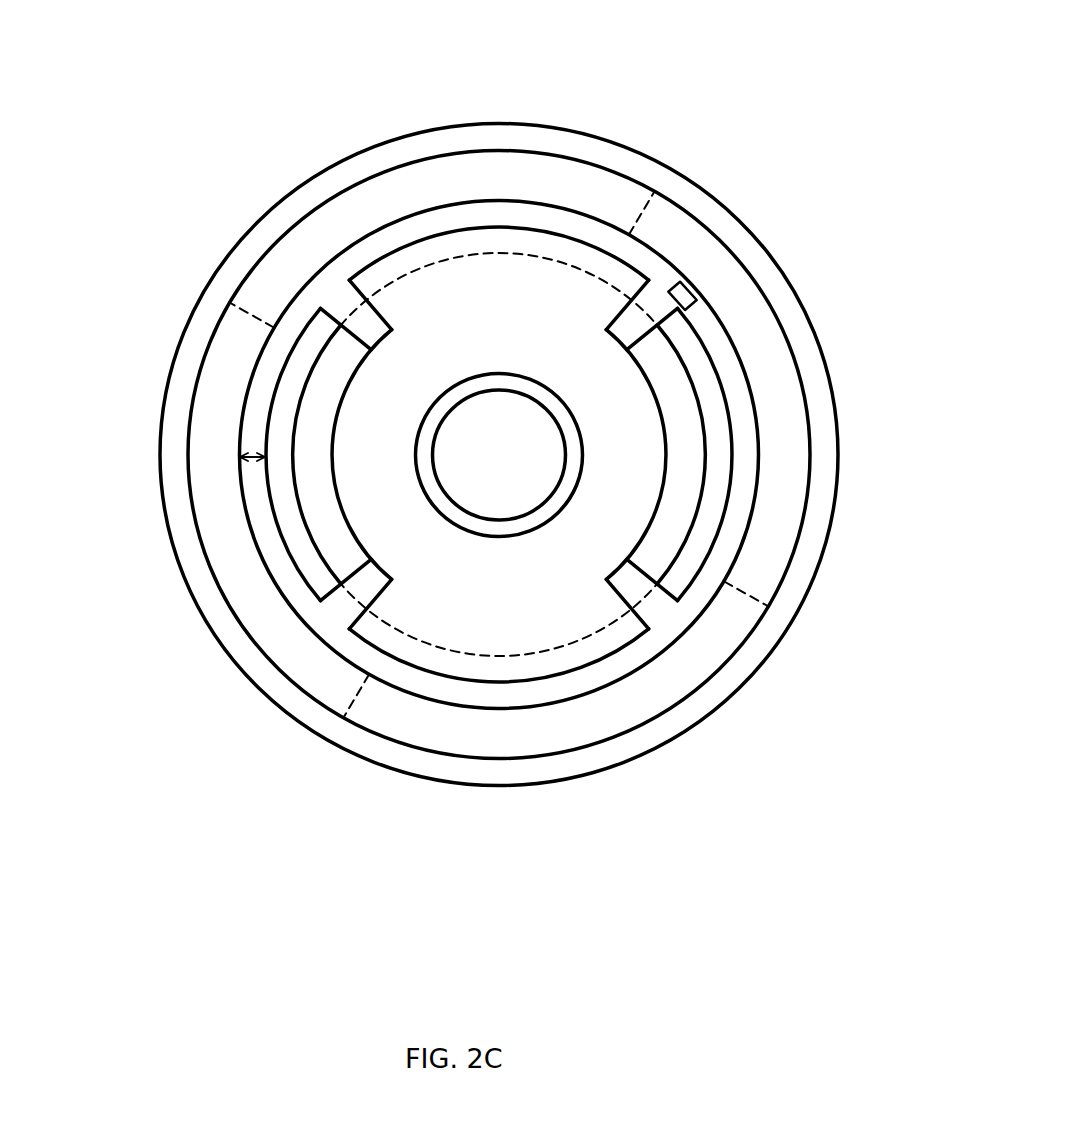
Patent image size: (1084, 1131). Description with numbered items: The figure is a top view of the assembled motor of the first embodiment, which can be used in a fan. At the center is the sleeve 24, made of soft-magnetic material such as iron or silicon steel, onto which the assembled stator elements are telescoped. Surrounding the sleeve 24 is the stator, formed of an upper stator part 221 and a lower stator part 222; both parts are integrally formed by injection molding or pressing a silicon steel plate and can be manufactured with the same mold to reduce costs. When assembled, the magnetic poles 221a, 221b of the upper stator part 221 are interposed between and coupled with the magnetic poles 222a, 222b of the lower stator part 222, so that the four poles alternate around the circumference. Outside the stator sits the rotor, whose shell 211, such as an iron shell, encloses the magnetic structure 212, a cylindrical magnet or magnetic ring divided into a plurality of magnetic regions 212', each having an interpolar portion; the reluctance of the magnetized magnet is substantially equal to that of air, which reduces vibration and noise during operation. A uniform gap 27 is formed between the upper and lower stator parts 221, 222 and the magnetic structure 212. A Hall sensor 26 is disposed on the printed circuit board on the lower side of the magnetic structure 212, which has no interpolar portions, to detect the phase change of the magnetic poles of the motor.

The sleeve 24 is at (445, 410).
The Hall sensor 26 is at (697, 282).
The uniform gap 27 is at (246, 452).
The shell 211 is at (830, 473).
The magnetic structure 212 is at (571, 455).
The magnetic region 212' is at (494, 469).
The upper stator part 221 is at (527, 317).
The magnetic pole 221a is at (474, 245).
The magnetic pole 221b is at (543, 665).
The lower stator part 222 is at (662, 563).
The magnetic pole 222a is at (282, 492).
The magnetic pole 222b is at (698, 538).